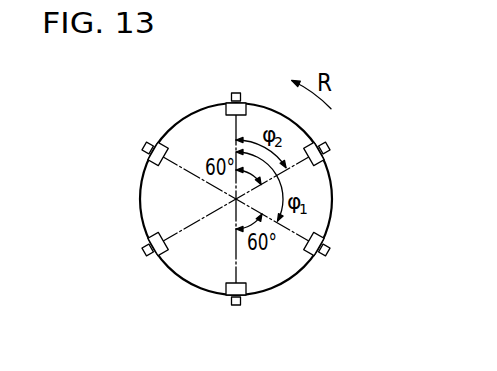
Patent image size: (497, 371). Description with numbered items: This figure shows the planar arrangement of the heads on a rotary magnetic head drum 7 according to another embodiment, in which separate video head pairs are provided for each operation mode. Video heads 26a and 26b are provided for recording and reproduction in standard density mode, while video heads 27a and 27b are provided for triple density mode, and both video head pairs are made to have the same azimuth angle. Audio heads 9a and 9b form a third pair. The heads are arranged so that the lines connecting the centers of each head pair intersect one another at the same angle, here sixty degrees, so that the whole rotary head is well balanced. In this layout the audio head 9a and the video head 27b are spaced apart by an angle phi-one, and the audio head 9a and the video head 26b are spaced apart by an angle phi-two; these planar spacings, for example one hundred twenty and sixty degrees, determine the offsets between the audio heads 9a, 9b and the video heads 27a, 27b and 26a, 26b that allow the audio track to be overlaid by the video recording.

The motor stator housing 7 is at (182, 120).
The audio head 9a is at (236, 93).
The audio head 9b is at (236, 305).
The video head 26a is at (150, 251).
The video head 26b is at (329, 145).
The video head 27a is at (143, 146).
The video head 27b is at (329, 257).